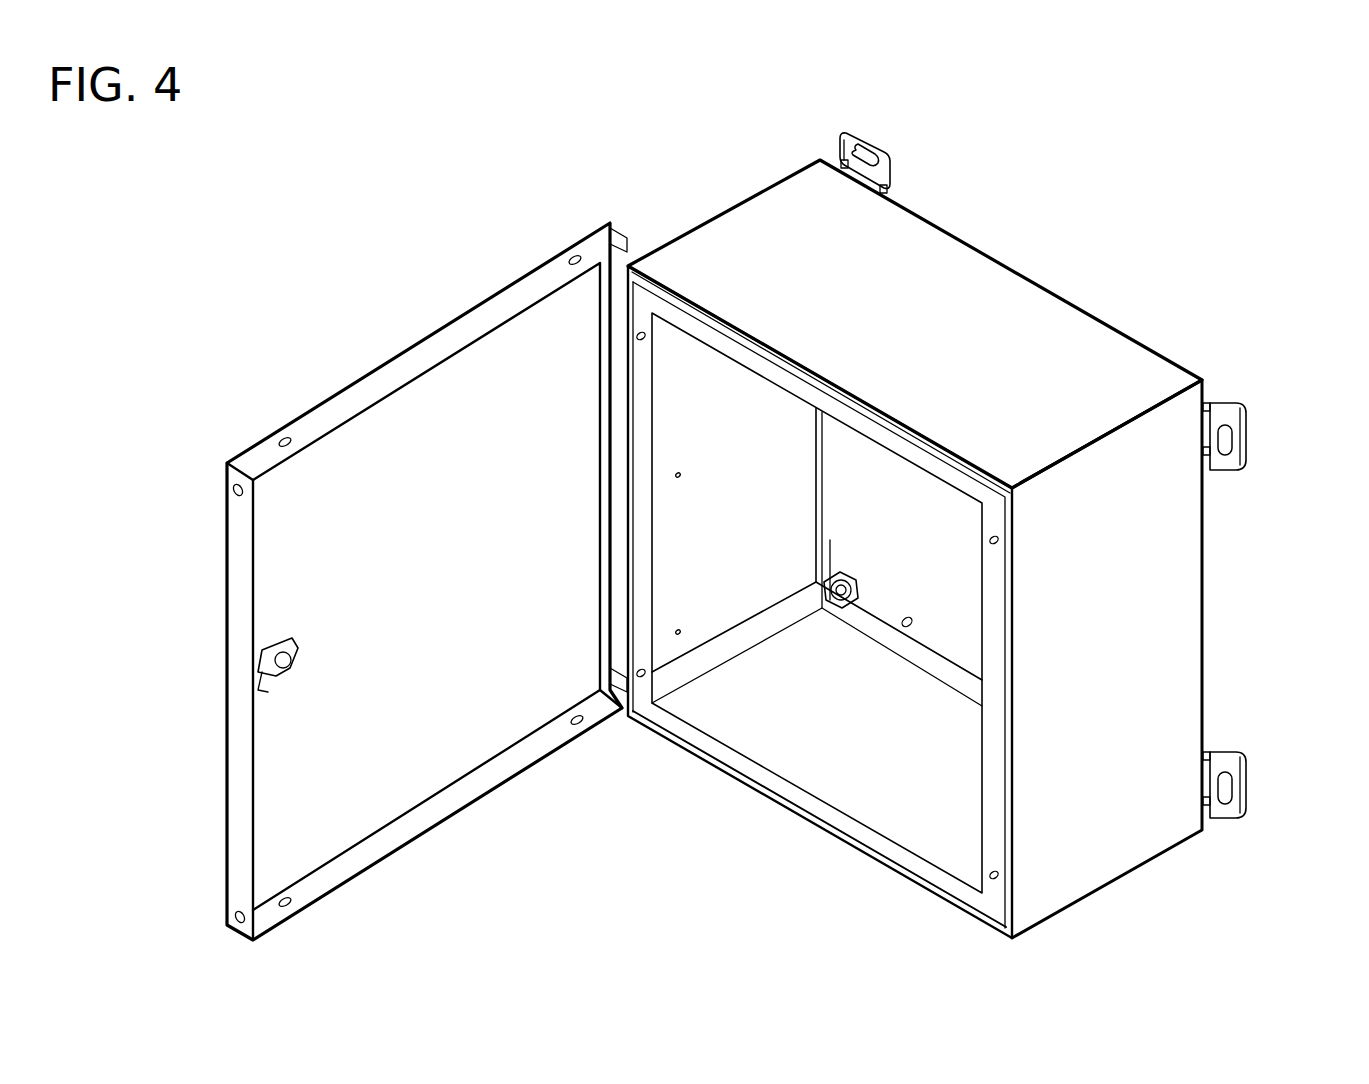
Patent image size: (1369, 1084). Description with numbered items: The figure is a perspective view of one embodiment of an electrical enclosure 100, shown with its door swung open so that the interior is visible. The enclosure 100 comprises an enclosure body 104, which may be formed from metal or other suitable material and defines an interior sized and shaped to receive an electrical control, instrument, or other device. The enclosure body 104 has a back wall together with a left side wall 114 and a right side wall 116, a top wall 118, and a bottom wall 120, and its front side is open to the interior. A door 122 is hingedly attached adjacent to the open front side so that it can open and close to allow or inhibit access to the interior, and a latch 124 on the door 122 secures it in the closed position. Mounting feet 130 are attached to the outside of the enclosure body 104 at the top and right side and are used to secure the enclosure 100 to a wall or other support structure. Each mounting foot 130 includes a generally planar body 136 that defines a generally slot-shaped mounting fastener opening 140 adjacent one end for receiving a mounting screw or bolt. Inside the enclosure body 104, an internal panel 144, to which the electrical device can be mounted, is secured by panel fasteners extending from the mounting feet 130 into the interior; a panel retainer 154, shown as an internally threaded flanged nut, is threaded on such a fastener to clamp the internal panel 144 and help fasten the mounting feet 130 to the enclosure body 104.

The electrical enclosure 100 is at (1086, 140).
The enclosure body 104 is at (1046, 275).
The left side wall 114 is at (686, 598).
The right side wall 116 is at (1143, 657).
The top wall 118 is at (762, 238).
The bottom wall 120 is at (872, 773).
The door 122 is at (426, 350).
The latch 124 is at (270, 686).
The mounting foot 130 is at (866, 126).
The planar body 136 is at (884, 172).
The mounting fastener opening 140 is at (846, 150).
The internal panel 144 is at (950, 590).
The panel retainer 154 is at (838, 608).